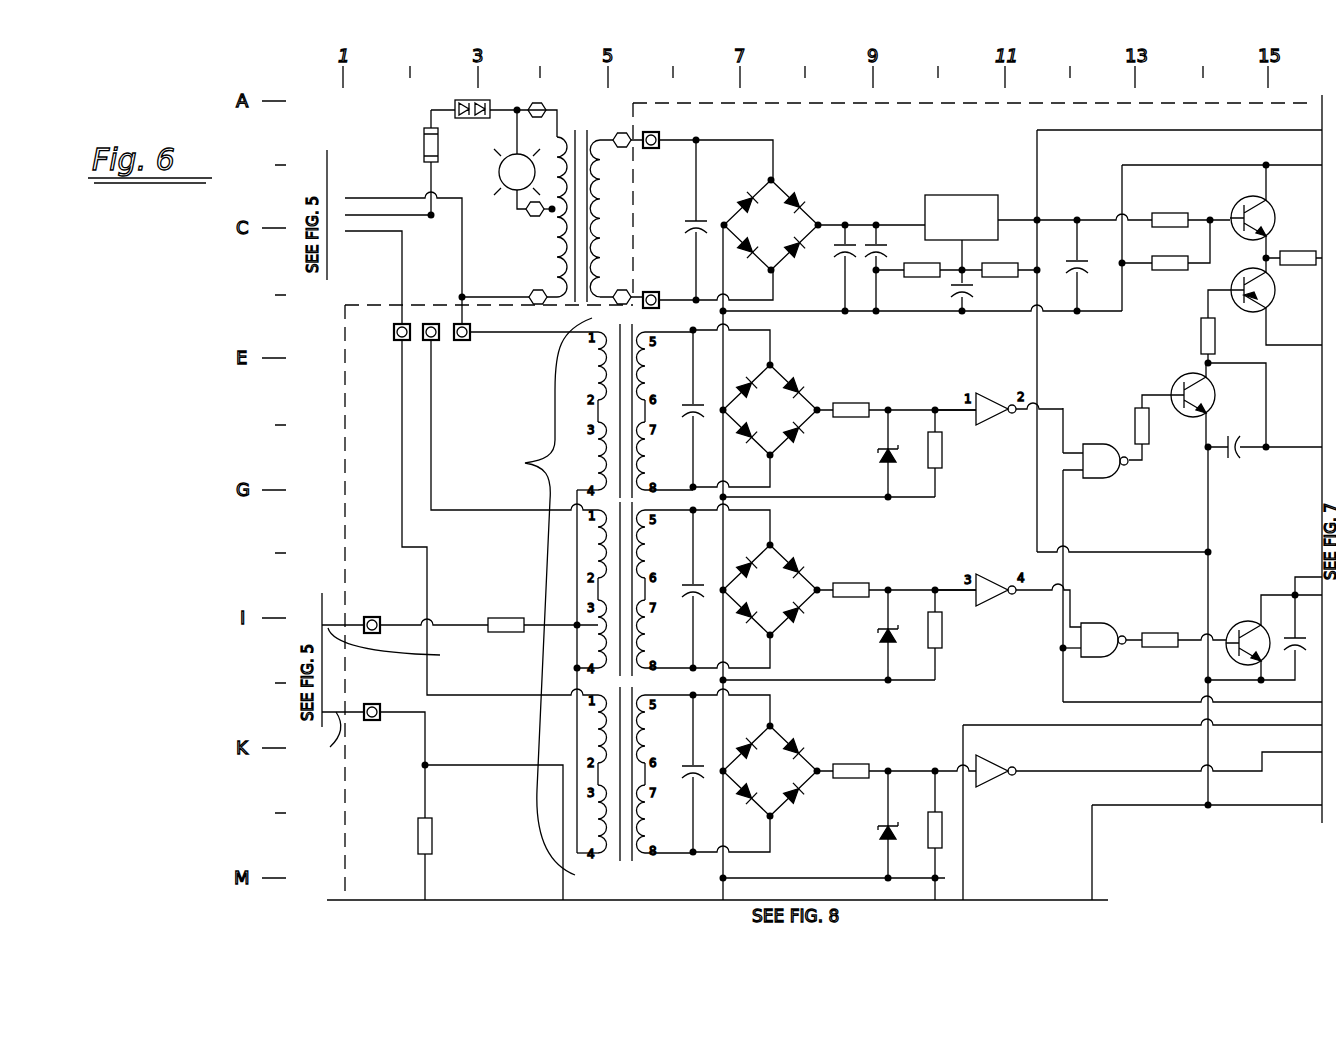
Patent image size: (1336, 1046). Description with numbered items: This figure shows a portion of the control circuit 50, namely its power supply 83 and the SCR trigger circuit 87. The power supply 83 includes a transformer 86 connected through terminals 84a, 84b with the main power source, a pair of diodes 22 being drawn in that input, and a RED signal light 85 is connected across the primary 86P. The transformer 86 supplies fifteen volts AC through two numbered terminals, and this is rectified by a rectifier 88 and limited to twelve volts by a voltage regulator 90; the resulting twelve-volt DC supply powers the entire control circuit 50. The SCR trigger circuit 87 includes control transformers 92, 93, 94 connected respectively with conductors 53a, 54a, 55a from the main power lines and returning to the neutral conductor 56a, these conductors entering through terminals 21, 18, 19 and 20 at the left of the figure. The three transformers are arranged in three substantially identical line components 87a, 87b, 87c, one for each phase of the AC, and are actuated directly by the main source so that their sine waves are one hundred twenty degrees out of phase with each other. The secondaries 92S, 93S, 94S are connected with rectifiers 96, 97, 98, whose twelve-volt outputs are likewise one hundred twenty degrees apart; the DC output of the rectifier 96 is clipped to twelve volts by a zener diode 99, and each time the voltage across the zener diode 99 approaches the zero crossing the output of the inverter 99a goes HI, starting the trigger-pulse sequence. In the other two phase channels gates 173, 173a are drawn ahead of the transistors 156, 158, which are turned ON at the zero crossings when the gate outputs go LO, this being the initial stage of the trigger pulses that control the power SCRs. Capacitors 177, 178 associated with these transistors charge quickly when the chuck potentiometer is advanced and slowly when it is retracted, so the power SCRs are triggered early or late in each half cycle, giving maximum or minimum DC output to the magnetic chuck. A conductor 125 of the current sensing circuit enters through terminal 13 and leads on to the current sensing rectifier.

The control circuit 50 is at (302, 88).
The power supply 83 is at (607, 124).
The diode 22 is at (494, 111).
The RED signal light 85 is at (500, 174).
The terminal 84a is at (550, 104).
The connector terminal 84b is at (530, 296).
The transformer 86 is at (581, 132).
The primary 86P is at (544, 240).
The conductor 55a is at (392, 197).
The conductor 53a is at (363, 219).
The conductor 54a is at (383, 238).
The conductor 56a is at (402, 647).
The terminal 21 is at (390, 332).
The terminal 18 is at (425, 341).
The terminal 19 is at (461, 341).
The terminal 20 is at (449, 616).
The terminal 13 is at (442, 793).
The conductor 125 is at (319, 740).
The SCR trigger circuit 87 is at (543, 398).
The line component 87a is at (525, 804).
The transformer 87b is at (532, 558).
The transformer 87c is at (538, 432).
The control transformer 92 is at (594, 752).
The control transformer 93 is at (587, 566).
The control transformer 94 is at (588, 464).
The secondary 92S is at (672, 831).
The secondary 93S is at (672, 650).
The secondary 94S is at (672, 488).
The rectifier 88 is at (804, 188).
The voltage regulator 90 is at (955, 195).
The rectifier 96 is at (790, 743).
The rectifier 97 is at (790, 560).
The rectifier 98 is at (790, 380).
The zener diode 99 is at (878, 820).
The inverter 99a is at (1004, 778).
The transistor 156 is at (1176, 380).
The transistor 158 is at (1234, 620).
The NAND gate 173 is at (1100, 478).
The NAND gate 173a is at (1100, 658).
The capacitor 177 is at (1240, 453).
The capacitor 178 is at (1300, 662).